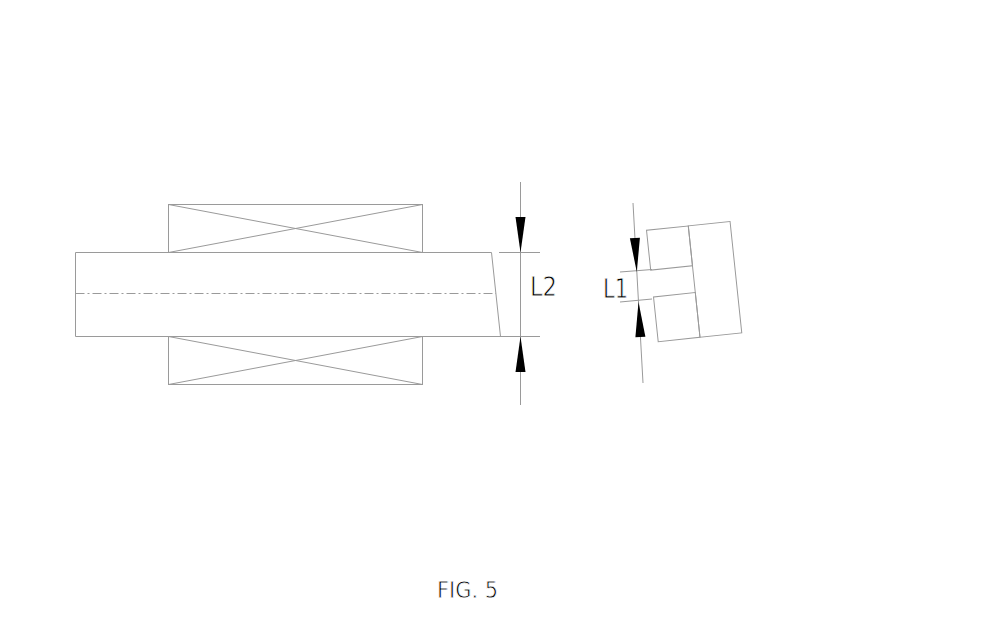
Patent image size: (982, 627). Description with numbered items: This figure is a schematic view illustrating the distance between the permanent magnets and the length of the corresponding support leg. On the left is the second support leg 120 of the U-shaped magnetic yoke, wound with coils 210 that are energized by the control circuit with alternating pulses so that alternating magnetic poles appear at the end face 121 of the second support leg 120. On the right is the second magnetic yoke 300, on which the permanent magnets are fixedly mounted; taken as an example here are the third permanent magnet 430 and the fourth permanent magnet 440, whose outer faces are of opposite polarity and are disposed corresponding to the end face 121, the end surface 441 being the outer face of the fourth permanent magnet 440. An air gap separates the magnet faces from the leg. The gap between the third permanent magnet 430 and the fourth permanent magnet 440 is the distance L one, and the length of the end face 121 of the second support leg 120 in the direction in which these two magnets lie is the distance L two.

The second support leg 120 is at (303, 277).
The end face of the second support leg 121 is at (496, 300).
The coils 210 is at (207, 220).
The second magnetic yoke 300 is at (716, 255).
The third permanent magnet 430 is at (684, 327).
The fourth permanent magnet 440 is at (729, 262).
The end surface of the fourth permanent magnet 441 is at (648, 248).